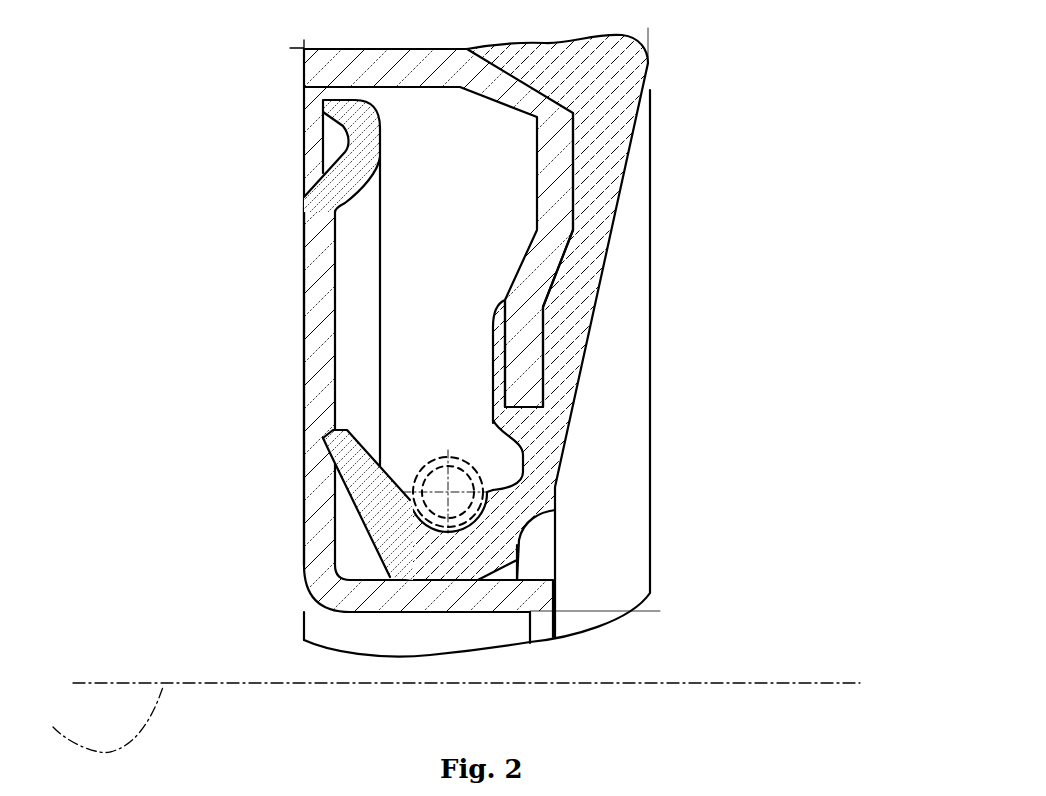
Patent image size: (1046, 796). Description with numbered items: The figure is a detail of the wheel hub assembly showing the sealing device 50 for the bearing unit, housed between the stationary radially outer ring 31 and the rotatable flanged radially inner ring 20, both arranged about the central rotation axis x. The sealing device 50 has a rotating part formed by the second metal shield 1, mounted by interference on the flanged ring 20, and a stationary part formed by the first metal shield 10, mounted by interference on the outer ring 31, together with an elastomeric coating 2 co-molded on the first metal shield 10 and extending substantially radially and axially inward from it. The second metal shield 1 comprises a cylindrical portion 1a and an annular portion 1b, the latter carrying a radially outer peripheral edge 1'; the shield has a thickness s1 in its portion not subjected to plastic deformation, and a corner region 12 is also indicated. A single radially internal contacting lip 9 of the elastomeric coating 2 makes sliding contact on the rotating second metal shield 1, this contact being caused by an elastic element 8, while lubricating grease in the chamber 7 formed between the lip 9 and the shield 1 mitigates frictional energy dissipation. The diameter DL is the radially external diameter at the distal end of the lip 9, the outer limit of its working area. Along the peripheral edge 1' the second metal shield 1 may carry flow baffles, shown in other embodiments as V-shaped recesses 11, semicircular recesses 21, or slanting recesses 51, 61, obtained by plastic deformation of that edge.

The second metal shield 1 is at (331, 341).
The radially outer peripheral edge 1' is at (286, 297).
The cylindrical portion 1a is at (495, 597).
The annular portion 1b is at (318, 340).
The elastomeric coating 2 is at (585, 118).
The chamber 7 is at (356, 547).
The elastic element 8 is at (470, 475).
The contacting lip 9 is at (363, 487).
The first metal shield 10 is at (562, 182).
The V-shaped recesses 11 is at (212, 151).
The housing corner 12 is at (315, 89).
The flanged radially inner ring 20 is at (427, 633).
The semicircular recesses 21 is at (212, 151).
The radially outer ring 31 is at (556, 27).
The sealing device 50 is at (786, 171).
The slanting flow baffles 51 is at (212, 151).
The slanting flow baffles 61 is at (323, 195).
The thickness of the second metal shield s1 is at (402, 383).
The lip diameter DL is at (335, 425).
The central rotation axis x is at (446, 718).